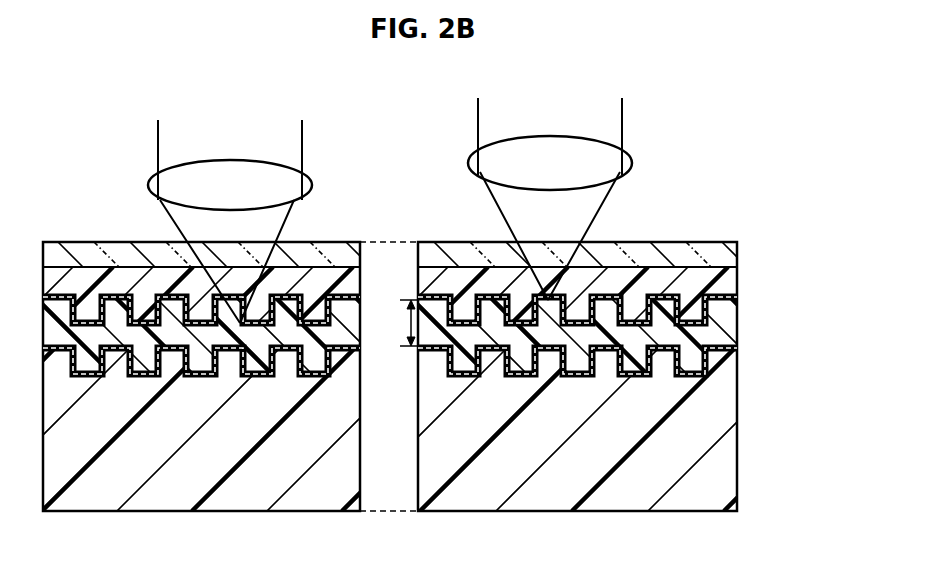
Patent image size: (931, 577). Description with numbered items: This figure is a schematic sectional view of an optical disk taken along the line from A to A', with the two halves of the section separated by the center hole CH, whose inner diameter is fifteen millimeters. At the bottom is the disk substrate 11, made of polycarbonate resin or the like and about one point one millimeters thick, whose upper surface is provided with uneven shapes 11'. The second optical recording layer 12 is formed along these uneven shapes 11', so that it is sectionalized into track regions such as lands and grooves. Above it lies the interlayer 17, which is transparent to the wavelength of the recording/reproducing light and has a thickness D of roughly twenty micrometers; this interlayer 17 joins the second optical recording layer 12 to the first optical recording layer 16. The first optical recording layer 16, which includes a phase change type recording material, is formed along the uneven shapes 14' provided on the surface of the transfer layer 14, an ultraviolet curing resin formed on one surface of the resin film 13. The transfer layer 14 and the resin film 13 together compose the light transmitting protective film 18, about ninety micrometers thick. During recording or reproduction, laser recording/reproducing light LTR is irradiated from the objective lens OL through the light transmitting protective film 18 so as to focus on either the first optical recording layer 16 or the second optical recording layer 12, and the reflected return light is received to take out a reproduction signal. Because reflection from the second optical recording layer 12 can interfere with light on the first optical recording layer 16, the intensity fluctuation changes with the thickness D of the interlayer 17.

The disk substrate 11 is at (443, 398).
The uneven shapes 11' is at (615, 451).
The second optical recording layer 12 is at (737, 358).
The resin film 13 is at (737, 259).
The transfer layer 14 is at (409, 262).
The uneven shapes 14' is at (580, 262).
The first optical recording layer 16 is at (737, 306).
The interlayer 17 is at (737, 333).
The light transmitting protective film 18 is at (432, 262).
The objective lens OL is at (312, 185).
The recording/reproducing light LTR is at (290, 216).
The center hole CH is at (405, 243).
The thickness of the interlayer D is at (399, 323).
The section line end point A is at (41, 539).
The section line end point A' is at (750, 539).